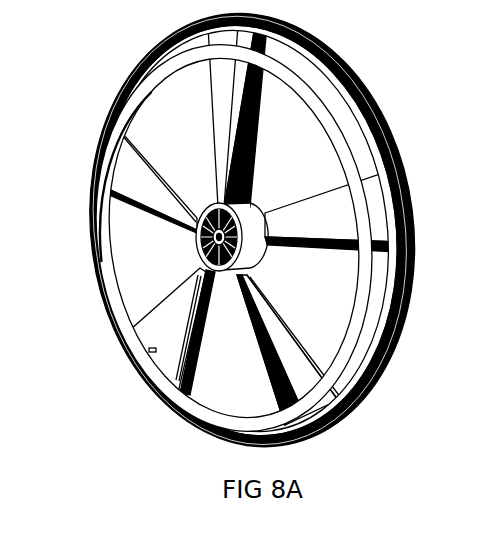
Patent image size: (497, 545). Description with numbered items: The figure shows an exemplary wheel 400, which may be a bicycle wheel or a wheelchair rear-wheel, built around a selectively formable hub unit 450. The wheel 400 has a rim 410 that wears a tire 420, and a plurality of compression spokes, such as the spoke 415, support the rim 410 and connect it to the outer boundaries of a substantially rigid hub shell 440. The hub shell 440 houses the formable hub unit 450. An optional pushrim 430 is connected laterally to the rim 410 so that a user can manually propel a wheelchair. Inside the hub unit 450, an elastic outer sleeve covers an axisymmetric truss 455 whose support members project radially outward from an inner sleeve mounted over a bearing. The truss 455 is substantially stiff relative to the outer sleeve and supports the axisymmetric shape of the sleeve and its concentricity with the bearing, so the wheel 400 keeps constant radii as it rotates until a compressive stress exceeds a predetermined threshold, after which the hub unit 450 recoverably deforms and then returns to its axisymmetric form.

The wheel 400 is at (352, 61).
The rim 410 is at (362, 370).
The spoke 415 is at (140, 178).
The tire 420 is at (410, 306).
The pushrim 430 is at (322, 127).
The hub shell 440 is at (247, 215).
The formable hub unit 450 is at (178, 253).
The truss 455 is at (496, 256).